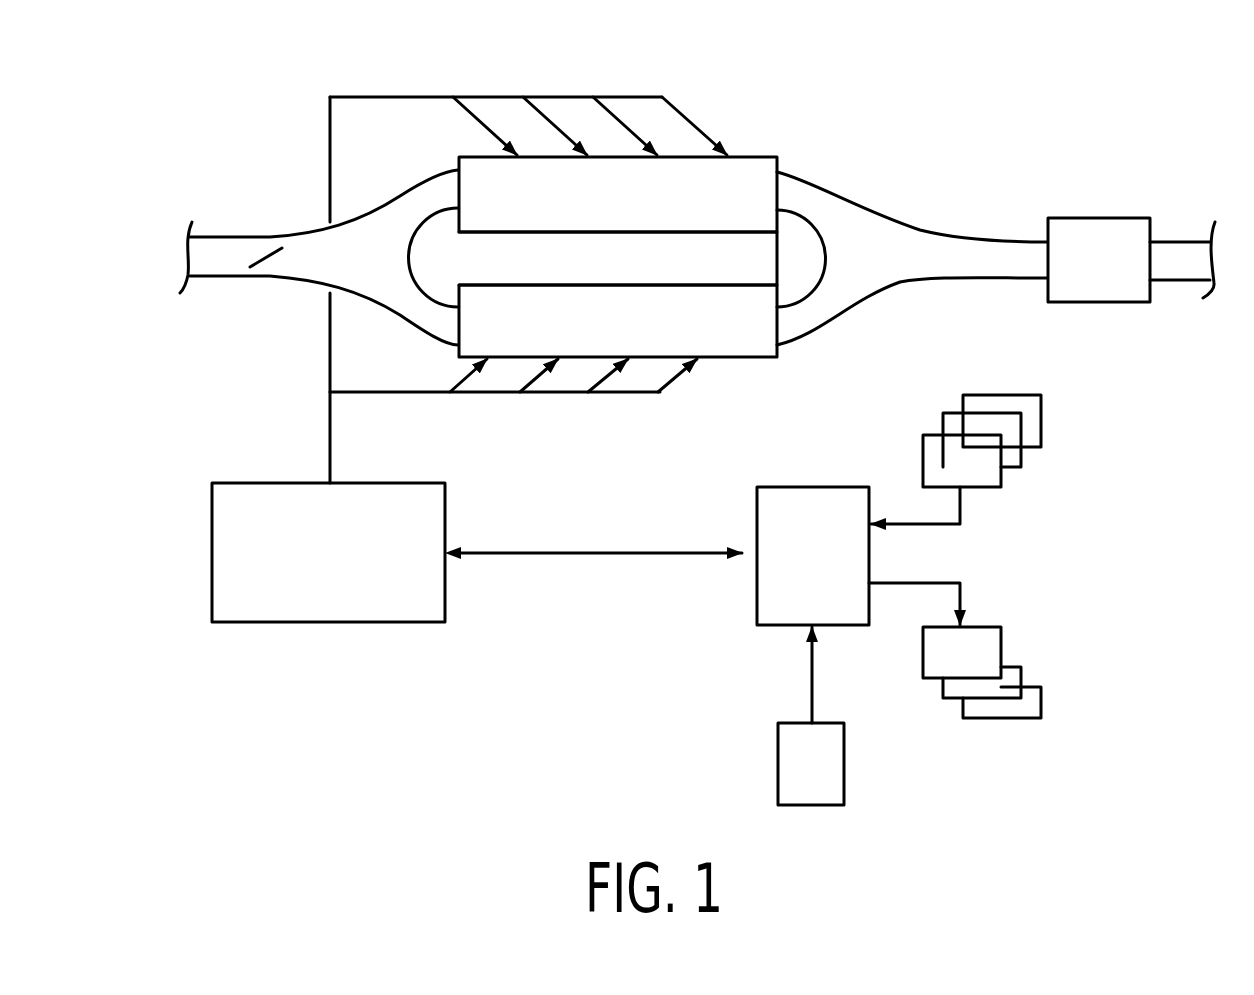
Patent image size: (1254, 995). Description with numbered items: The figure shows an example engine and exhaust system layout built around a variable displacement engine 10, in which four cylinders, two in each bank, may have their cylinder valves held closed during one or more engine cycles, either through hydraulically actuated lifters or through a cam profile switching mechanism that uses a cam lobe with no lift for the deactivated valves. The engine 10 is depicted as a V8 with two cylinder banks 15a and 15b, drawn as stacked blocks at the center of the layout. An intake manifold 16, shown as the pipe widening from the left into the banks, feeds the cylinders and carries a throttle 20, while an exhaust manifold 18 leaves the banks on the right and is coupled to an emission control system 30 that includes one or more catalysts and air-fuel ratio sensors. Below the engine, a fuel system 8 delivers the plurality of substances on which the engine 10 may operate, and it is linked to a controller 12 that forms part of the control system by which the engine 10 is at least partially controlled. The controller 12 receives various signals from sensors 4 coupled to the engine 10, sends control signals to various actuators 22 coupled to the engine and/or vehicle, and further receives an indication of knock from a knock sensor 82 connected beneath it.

The variable displacement engine 10 is at (780, 118).
The first cylinder bank 15a is at (641, 215).
The second cylinder bank 15b is at (641, 335).
The intake manifold 16 is at (308, 223).
The exhaust manifold 18 is at (857, 225).
The throttle 20 is at (268, 258).
The emission control system 30 is at (1100, 217).
The fuel system 8 is at (327, 622).
The controller 12 is at (783, 625).
The sensors 4 is at (1041, 417).
The actuators 22 is at (1041, 690).
The knock sensor 82 is at (844, 765).